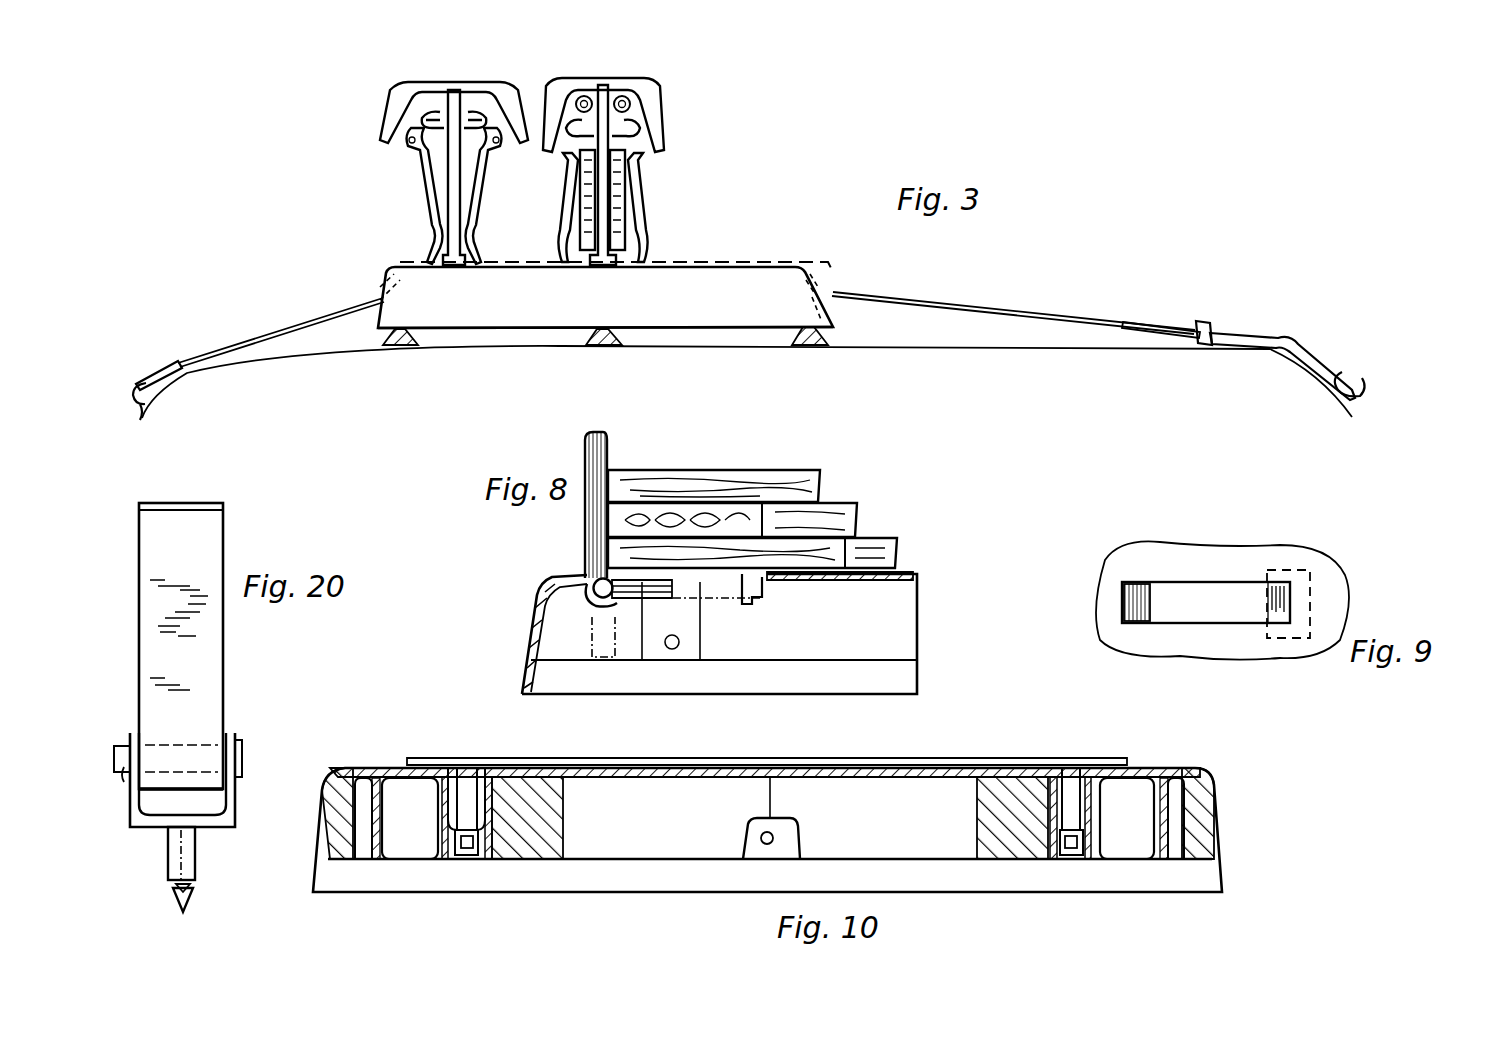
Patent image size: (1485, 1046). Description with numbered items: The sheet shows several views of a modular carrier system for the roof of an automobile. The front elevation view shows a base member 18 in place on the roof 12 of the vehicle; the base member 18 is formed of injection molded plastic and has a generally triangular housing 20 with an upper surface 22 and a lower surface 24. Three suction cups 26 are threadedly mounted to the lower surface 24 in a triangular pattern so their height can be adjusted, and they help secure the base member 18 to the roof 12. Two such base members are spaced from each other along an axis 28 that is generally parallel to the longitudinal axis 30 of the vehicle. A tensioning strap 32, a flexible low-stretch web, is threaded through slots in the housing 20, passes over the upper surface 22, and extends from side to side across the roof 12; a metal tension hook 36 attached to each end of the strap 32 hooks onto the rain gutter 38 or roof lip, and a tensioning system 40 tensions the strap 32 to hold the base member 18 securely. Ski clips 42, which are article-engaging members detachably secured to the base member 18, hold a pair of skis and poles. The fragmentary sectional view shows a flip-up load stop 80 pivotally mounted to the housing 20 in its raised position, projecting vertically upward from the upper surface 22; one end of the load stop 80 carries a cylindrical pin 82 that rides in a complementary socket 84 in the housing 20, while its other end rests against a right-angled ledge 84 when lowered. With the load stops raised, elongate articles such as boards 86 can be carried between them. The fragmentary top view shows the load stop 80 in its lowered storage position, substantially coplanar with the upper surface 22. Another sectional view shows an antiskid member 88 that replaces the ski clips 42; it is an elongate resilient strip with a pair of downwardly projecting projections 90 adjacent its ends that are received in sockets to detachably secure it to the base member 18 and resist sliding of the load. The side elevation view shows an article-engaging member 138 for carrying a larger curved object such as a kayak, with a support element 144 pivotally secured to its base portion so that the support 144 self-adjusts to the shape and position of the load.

In FIG. 3, the roof 12 is at (343, 350).
In FIG. 3, the base member 18 is at (826, 262).
In FIG. 8, the base member 18 is at (524, 656).
In FIG. 3, the housing 20 is at (486, 305).
In FIG. 3, the upper surface 22 is at (729, 266).
In FIG. 8, the upper surface 22 is at (916, 572).
In FIG. 3, the lower surface 24 is at (710, 330).
In FIG. 3, the suction cups 26 is at (398, 346).
In FIG. 3, the axis 28 is at (606, 297).
In FIG. 3, the longitudinal axis 30 is at (786, 371).
In FIG. 3, the tensioning strap 32 is at (306, 326).
In FIG. 3, the tension hook 36 is at (146, 422).
In FIG. 3, the rain gutter 38 is at (160, 388).
In FIG. 3, the tensioning system 40 is at (1240, 331).
In FIG. 3, the ski clips 42 is at (418, 189).
In FIG. 8, the load stop 80 is at (585, 445).
In FIG. 9, the load stop 80 is at (1207, 590).
In FIG. 8, the cylindrical pin 82 is at (596, 580).
In FIG. 8, the socket and right-angled ledge 84 is at (589, 598).
In FIG. 8, the boards 86 is at (800, 486).
In FIG. 10, the antiskid member 88 is at (900, 758).
In FIG. 10, the projections 90 is at (447, 797).
In FIG. 20, the article-engaging member 138 is at (228, 536).
In FIG. 20, the support element 144 is at (217, 653).